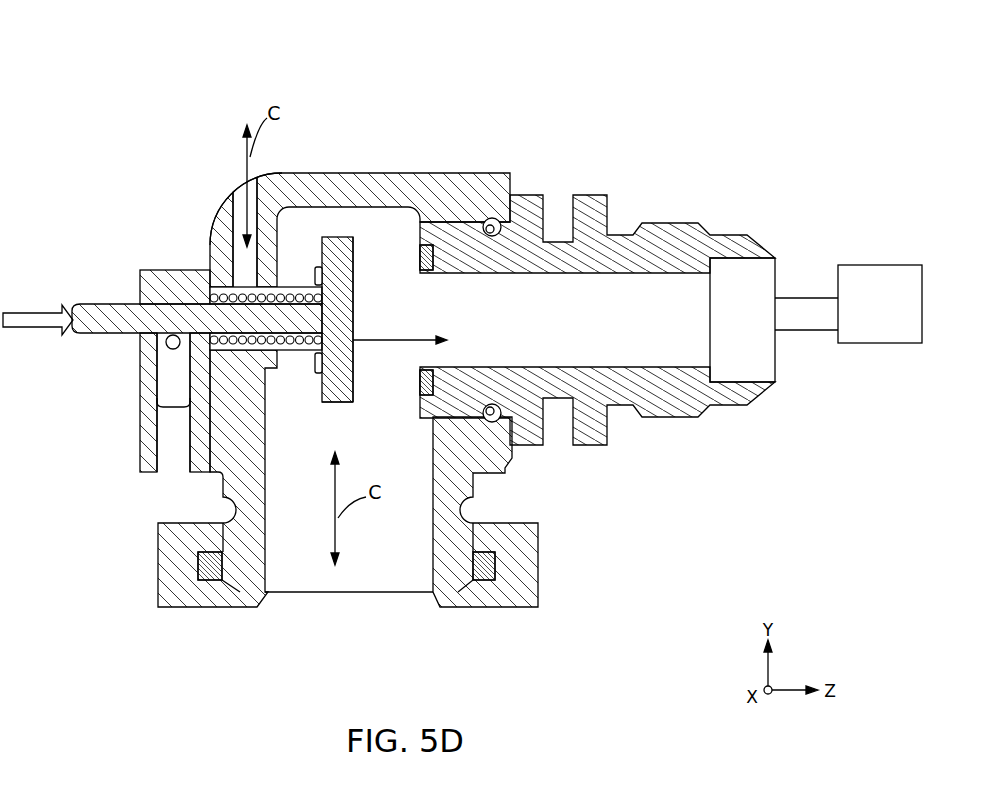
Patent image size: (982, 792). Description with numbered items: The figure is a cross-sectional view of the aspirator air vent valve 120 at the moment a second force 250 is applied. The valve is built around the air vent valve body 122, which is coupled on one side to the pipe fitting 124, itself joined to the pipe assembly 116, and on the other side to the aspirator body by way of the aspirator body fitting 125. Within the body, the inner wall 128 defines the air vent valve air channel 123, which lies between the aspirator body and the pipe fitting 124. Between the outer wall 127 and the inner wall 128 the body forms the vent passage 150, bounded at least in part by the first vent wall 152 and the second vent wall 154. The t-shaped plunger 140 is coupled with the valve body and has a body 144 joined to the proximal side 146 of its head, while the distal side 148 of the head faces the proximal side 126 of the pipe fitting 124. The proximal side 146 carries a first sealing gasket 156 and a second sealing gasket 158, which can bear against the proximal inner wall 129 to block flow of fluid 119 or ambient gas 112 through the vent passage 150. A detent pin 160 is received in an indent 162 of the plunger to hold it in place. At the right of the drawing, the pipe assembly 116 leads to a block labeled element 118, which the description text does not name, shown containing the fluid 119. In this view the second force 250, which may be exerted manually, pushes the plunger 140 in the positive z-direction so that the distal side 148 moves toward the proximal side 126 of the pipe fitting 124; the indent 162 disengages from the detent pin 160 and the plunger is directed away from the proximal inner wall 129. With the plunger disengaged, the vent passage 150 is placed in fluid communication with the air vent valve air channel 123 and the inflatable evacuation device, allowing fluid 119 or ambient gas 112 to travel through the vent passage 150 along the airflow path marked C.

The ambient gas 112 is at (243, 57).
The pipe assembly 116 is at (813, 308).
The controller 118 is at (898, 263).
The fluid 119 is at (866, 315).
The aspirator air vent valve 120 is at (517, 95).
The air vent valve body 122 is at (405, 170).
The air vent valve air channel 123 is at (377, 540).
The pipe fitting 124 is at (713, 235).
The aspirator body fitting 125 is at (518, 553).
The proximal side of pipe fitting 126 is at (437, 255).
The outer wall 127 is at (208, 232).
The inner wall 128 is at (228, 283).
The proximal inner wall 129 is at (277, 360).
The plunger 140 is at (346, 224).
The body 144 is at (117, 312).
The proximal side 146 is at (341, 403).
The distal side 148 is at (356, 326).
The vent passage 150 is at (243, 192).
The first vent wall 152 is at (208, 240).
The second vent wall 154 is at (272, 180).
The first sealing gasket 156 is at (325, 280).
The second sealing gasket 158 is at (318, 364).
The detent pin 160 is at (165, 347).
The indent 162 is at (220, 337).
The second force 250 is at (50, 327).